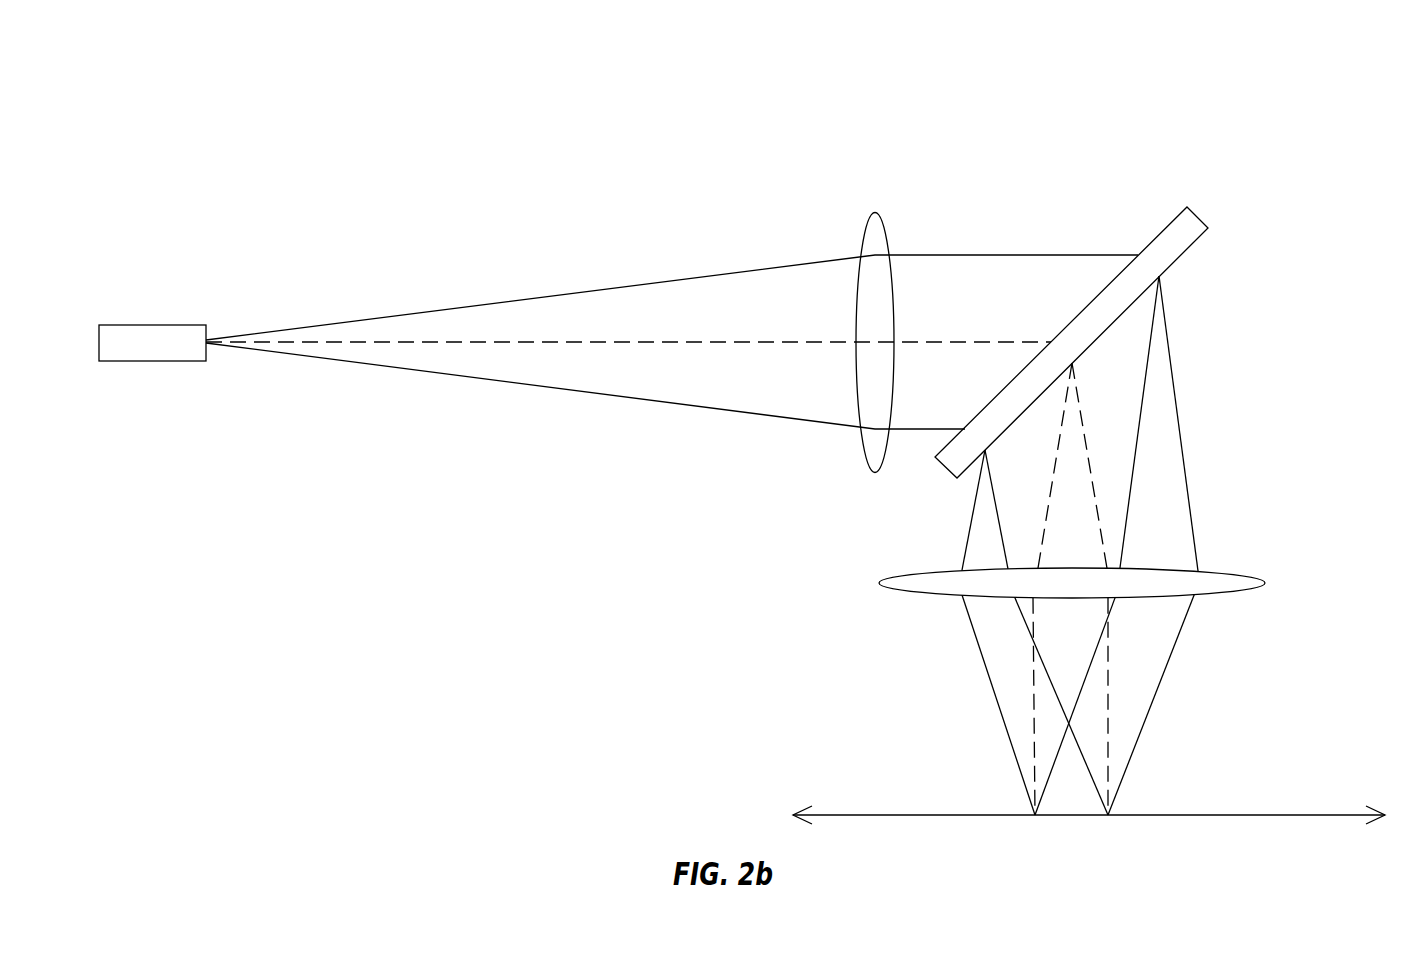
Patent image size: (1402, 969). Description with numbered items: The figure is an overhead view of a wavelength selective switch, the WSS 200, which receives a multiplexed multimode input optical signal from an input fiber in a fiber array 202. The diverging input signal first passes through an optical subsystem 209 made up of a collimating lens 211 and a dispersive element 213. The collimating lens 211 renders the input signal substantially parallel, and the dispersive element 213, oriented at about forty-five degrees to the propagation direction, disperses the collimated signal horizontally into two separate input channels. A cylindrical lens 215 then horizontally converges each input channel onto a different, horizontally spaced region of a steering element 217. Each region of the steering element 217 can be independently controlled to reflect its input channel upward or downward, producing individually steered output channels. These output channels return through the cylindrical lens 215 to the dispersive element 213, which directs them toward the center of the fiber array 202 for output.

The WSS 200 is at (1210, 115).
The fiber array 202 is at (146, 364).
The collimating lens 211 is at (870, 230).
The optical subsystem 209 is at (1000, 232).
The dispersive element 213 is at (1160, 232).
The cylindrical lens 215 is at (1232, 578).
The steering element 217 is at (1231, 815).